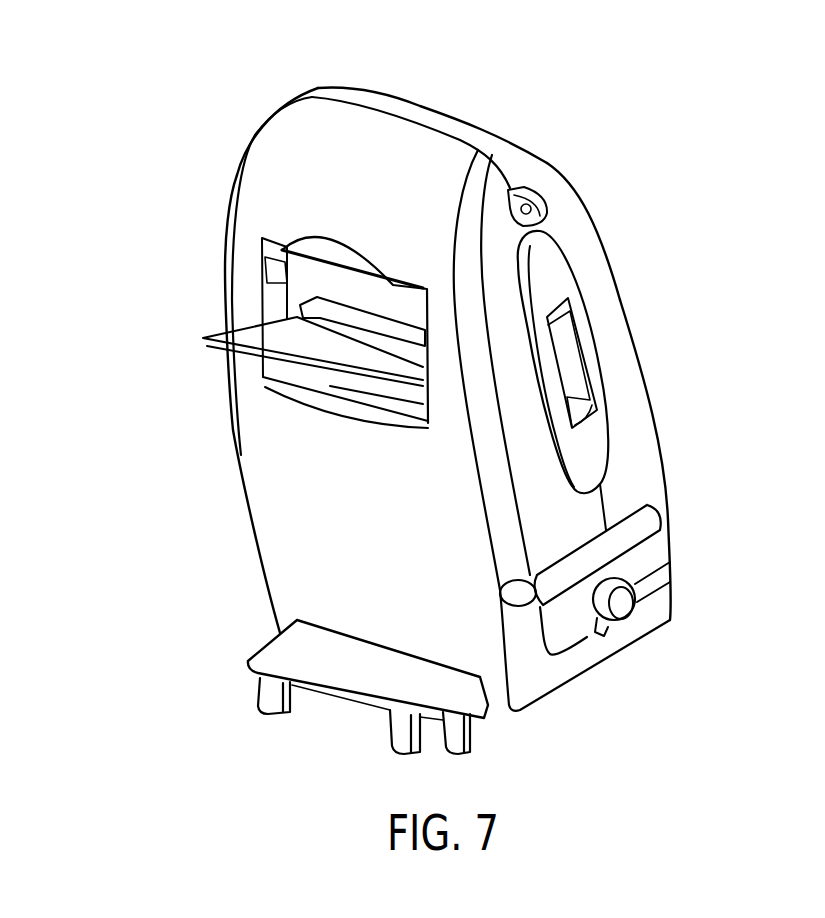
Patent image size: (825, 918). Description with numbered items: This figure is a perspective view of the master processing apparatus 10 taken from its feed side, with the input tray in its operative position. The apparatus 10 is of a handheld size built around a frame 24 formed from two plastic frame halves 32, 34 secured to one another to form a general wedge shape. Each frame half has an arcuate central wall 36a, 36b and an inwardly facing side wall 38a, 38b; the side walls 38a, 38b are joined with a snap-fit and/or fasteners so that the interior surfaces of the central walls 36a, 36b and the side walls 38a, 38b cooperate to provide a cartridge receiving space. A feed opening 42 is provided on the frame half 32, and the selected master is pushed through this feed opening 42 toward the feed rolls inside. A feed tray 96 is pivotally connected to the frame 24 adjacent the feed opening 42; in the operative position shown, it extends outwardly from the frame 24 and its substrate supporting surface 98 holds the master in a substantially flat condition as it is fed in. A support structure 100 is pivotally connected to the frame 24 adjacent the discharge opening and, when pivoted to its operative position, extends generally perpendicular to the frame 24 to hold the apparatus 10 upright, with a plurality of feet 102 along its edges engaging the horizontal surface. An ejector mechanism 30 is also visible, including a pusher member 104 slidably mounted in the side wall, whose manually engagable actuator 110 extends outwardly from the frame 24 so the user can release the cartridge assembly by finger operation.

The master processing apparatus 10 is at (583, 127).
The frame 24 is at (370, 127).
The ejector mechanism 30 is at (609, 638).
The frame half 32 is at (283, 140).
The frame half 34 is at (442, 120).
The arcuate central wall 36a is at (255, 197).
The arcuate central wall 36b is at (487, 133).
The inwardly facing side wall 38a is at (527, 480).
The inwardly facing side wall 38b is at (650, 449).
The feed opening 42 is at (303, 290).
The feed tray 96 is at (217, 340).
The substrate supporting surface 98 is at (296, 362).
The support structure 100 is at (278, 651).
The feet 102 is at (263, 695).
The pusher member 104 is at (632, 597).
The manually engagable actuator 110 is at (630, 615).